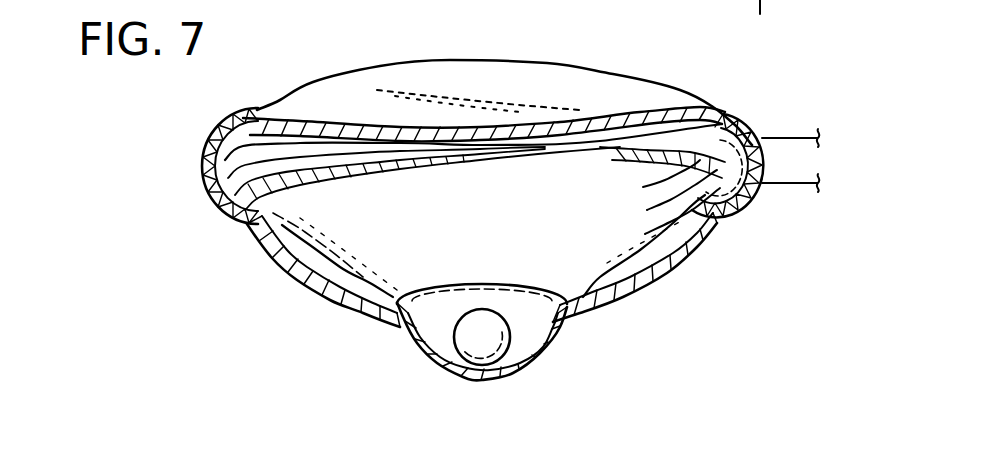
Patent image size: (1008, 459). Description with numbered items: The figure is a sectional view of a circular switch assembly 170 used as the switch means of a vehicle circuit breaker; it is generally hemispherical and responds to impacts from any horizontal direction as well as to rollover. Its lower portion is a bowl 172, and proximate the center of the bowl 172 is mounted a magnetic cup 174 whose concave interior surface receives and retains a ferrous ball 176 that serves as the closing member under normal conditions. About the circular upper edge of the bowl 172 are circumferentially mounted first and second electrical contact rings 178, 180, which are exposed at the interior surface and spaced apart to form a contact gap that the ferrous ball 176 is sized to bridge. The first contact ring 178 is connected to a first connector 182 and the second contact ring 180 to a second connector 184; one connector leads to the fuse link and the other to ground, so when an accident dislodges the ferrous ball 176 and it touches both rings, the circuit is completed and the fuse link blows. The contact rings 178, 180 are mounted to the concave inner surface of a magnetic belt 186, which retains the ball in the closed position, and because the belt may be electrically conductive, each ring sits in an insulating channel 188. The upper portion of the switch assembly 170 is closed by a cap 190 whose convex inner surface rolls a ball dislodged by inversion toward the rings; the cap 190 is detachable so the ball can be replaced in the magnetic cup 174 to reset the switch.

The circular switch assembly 170 is at (226, 237).
The bowl 172 is at (680, 286).
The magnetic cup 174 is at (530, 355).
The ferrous ball 176 is at (490, 338).
The first electrical contact ring 178 is at (210, 205).
The second electrical contact ring 180 is at (212, 150).
The first connector 182 is at (797, 184).
The second connector 184 is at (795, 137).
The magnetic belt 186 is at (258, 110).
The insulating channel 188 is at (235, 140).
The cap 190 is at (533, 64).